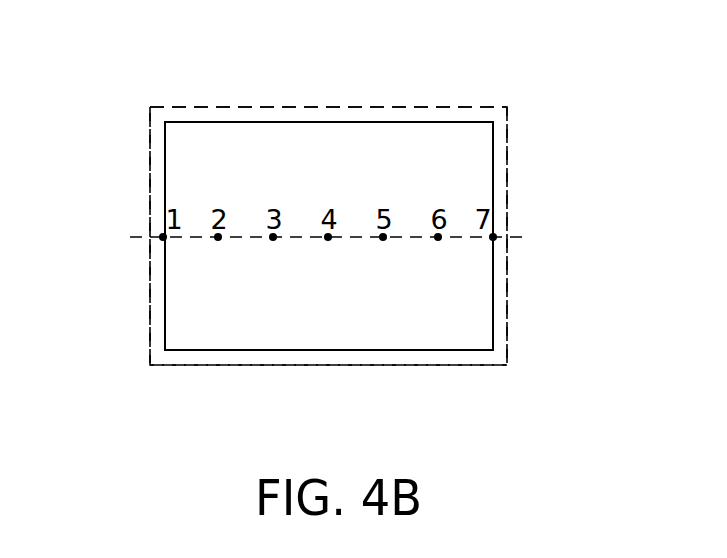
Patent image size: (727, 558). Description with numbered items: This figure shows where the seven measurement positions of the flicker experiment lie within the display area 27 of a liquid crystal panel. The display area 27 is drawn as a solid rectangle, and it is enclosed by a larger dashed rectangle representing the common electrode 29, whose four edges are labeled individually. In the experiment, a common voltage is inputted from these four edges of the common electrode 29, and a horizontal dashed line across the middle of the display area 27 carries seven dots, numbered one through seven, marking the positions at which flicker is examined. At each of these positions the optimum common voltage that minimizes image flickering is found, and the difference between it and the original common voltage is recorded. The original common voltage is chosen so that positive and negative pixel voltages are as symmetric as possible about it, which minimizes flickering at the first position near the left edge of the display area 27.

The display area 27 is at (493, 323).
The common electrode 29 is at (508, 142).